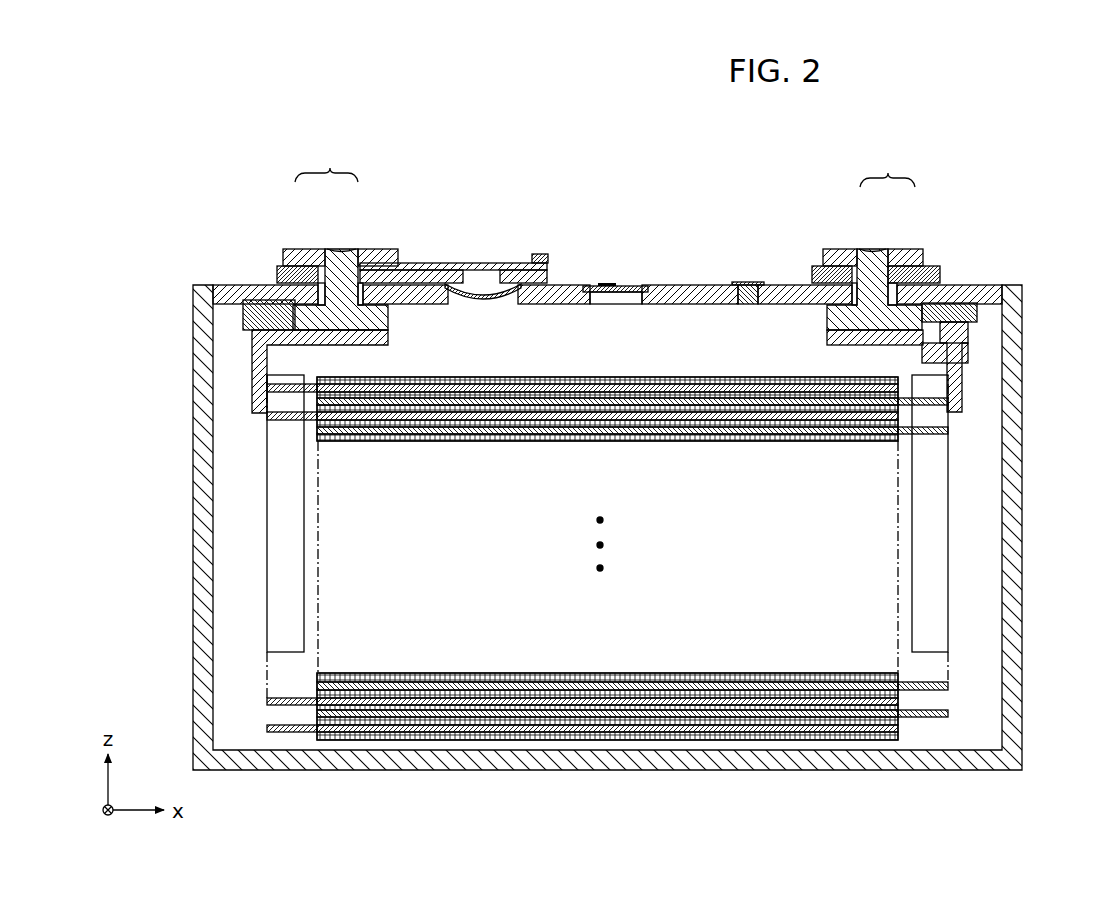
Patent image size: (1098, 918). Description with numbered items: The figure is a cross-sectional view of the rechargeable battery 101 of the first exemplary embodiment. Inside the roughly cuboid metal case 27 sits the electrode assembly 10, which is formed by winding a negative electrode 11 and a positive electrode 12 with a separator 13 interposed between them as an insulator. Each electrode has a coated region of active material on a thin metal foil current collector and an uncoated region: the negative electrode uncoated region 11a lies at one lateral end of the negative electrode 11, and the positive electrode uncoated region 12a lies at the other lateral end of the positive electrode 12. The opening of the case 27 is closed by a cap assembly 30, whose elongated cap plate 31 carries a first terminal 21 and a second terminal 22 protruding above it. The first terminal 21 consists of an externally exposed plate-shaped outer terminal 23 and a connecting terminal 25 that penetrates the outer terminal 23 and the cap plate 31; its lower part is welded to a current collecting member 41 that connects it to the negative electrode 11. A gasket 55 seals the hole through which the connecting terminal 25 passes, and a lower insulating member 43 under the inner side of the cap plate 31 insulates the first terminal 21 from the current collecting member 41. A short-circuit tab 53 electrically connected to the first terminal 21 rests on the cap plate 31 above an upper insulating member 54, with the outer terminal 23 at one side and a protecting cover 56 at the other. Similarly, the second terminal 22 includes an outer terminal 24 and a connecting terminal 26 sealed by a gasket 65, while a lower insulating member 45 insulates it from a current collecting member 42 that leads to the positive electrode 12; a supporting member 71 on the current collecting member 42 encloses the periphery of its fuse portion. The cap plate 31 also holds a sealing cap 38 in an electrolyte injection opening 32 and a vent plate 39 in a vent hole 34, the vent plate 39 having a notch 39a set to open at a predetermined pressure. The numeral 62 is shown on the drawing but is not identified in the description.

The rechargeable battery 101 is at (634, 122).
The electrode assembly 10 is at (705, 742).
The negative electrode 11 is at (410, 729).
The negative electrode uncoated region 11a is at (283, 732).
The positive electrode 12 is at (802, 716).
The positive electrode uncoated region 12a is at (928, 718).
The separator 13 is at (612, 708).
The first terminal 21 is at (326, 162).
The second terminal 22 is at (887, 168).
The outer terminal 23 is at (320, 249).
The outer terminal 24 is at (905, 252).
The connecting terminal 25 is at (343, 250).
The connecting terminal 26 is at (875, 252).
The case 27 is at (1012, 562).
The cap assembly 30 is at (575, 282).
The cap plate 31 is at (228, 290).
The electrolyte injection opening 32 is at (748, 304).
The vent hole 34 is at (640, 304).
The sealing cap 38 is at (748, 282).
The vent plate 39 is at (641, 286).
The notch 39a is at (607, 283).
The current collecting member 41 is at (260, 400).
The current collecting member 42 is at (962, 395).
The lower insulating member 43 is at (255, 315).
The lower insulating member 45 is at (975, 312).
The short-circuit tab 53 is at (412, 262).
The upper insulating member 54 is at (540, 253).
The gasket 55 is at (275, 282).
The protecting cover 56 is at (487, 283).
The insulating gasket 62 is at (935, 268).
The gasket 65 is at (850, 296).
The supporting member 71 is at (968, 352).